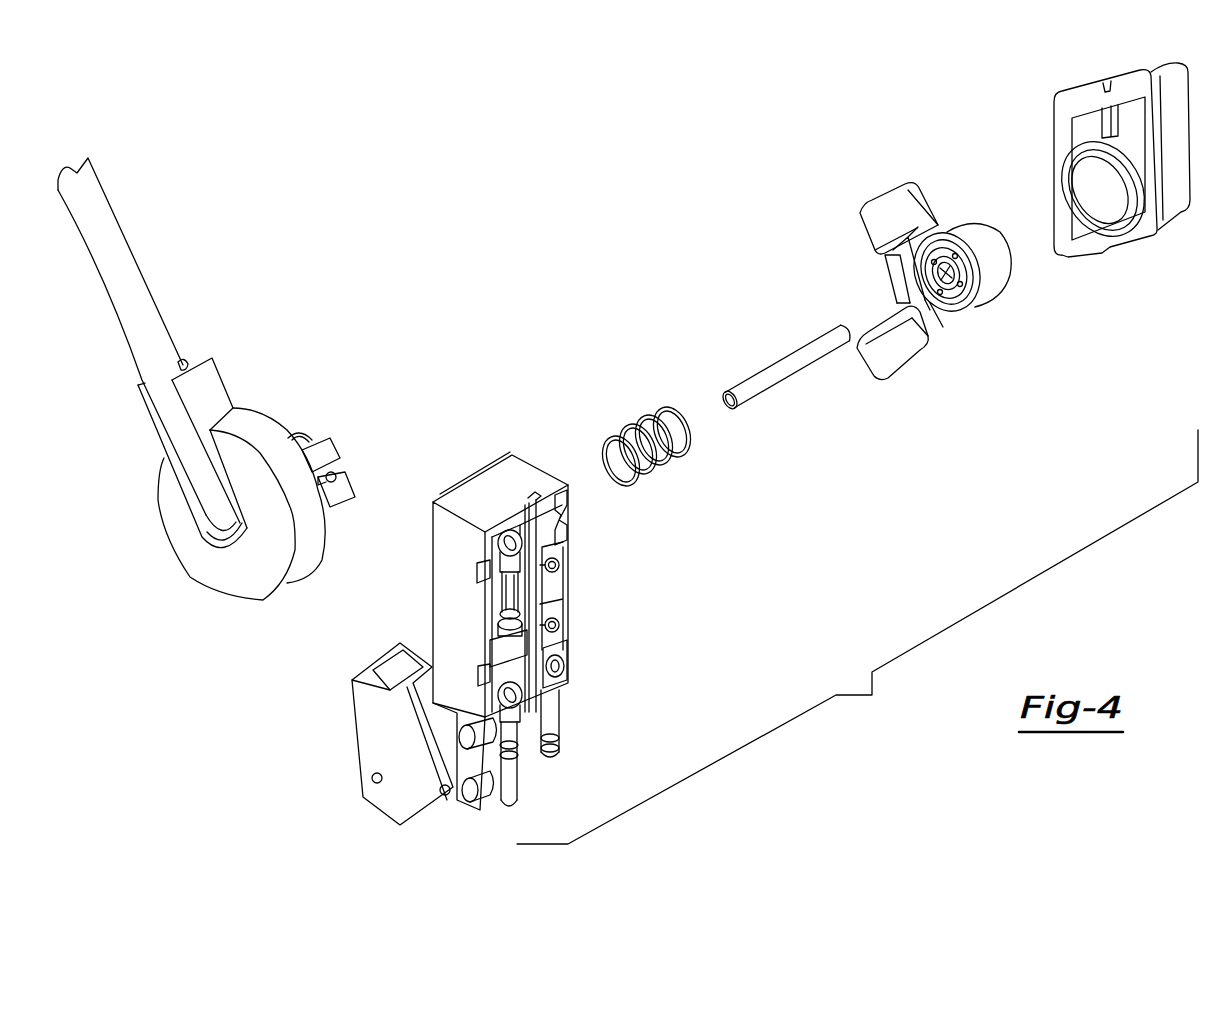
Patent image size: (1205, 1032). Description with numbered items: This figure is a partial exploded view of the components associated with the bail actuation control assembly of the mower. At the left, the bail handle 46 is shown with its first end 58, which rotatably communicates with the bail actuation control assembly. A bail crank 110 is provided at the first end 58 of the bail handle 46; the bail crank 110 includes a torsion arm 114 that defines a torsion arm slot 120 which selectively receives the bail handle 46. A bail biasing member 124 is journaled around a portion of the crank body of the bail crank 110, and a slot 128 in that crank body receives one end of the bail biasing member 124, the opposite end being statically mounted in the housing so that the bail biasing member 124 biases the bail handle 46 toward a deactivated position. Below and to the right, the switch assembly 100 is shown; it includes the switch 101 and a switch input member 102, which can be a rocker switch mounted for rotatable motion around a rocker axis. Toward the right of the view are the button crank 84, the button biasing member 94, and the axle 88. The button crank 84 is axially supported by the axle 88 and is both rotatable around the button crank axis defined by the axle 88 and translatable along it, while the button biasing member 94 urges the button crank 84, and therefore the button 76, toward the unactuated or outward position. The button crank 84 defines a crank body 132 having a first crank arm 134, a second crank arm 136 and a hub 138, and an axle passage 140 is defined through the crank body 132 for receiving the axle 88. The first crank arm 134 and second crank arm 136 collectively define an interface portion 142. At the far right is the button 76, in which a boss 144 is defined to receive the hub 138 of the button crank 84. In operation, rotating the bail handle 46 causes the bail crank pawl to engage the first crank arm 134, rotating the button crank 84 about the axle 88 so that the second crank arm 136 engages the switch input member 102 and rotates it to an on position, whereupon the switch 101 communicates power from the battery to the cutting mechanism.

The bail handle 46 is at (137, 268).
The first end 58 is at (116, 438).
The torsion arm slot 120 is at (179, 364).
The torsion arm 114 is at (213, 383).
The bail crank 110 is at (263, 427).
The bail biasing member 124 is at (302, 434).
The slot 128 is at (337, 473).
The switch assembly 100 is at (591, 564).
The switch 101 is at (443, 607).
The switch input member 102 is at (380, 747).
The button biasing member 94 is at (624, 438).
The axle 88 is at (746, 386).
The interface portion 142 is at (855, 300).
The button crank 84 is at (932, 274).
The first crank arm 134 is at (878, 199).
The second crank arm 136 is at (872, 364).
The hub 138 is at (1000, 246).
The crank body 132 is at (892, 267).
The axle passage 140 is at (947, 313).
The button 76 is at (1089, 160).
The boss 144 is at (1083, 179).